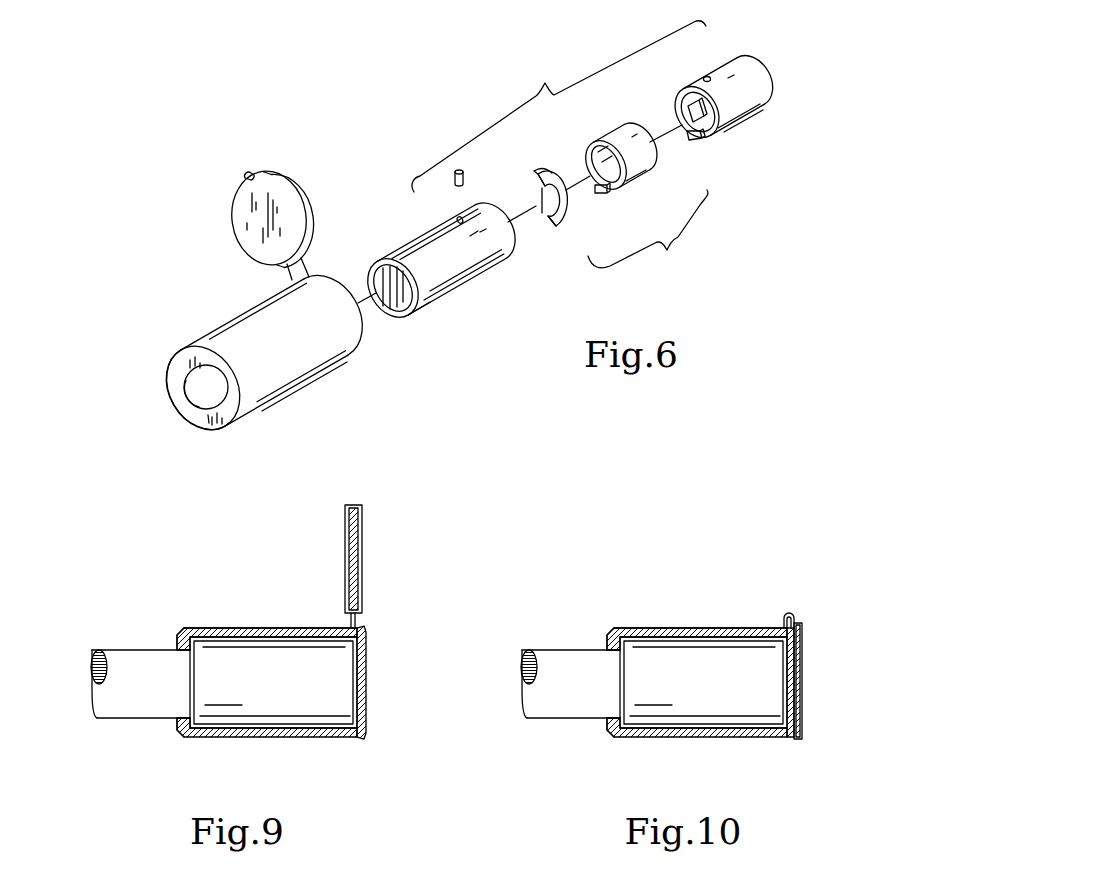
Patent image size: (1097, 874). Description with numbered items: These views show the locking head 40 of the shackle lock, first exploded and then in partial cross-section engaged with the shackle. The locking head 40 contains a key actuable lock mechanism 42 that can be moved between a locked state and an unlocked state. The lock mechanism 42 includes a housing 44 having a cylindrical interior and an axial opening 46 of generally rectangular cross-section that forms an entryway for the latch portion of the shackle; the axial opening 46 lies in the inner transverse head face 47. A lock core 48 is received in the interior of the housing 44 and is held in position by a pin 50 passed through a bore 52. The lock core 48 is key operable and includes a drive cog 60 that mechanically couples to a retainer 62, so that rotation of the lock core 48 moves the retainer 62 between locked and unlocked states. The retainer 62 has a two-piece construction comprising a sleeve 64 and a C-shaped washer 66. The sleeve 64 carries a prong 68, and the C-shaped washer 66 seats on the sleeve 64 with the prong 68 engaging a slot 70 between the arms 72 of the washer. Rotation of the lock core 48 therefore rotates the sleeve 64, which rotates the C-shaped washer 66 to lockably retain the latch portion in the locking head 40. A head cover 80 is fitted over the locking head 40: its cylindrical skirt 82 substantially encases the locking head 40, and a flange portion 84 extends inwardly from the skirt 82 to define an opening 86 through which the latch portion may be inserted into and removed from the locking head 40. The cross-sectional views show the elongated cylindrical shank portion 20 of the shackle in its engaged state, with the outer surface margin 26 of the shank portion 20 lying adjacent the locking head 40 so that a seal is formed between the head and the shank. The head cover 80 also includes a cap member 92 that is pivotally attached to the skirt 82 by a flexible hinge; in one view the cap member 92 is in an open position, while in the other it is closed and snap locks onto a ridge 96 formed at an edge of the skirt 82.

In FIG. 9, the shank portion 20 is at (128, 666).
In FIG. 10, the shank portion 20 is at (558, 666).
In FIG. 9, the outer surface margin 26 is at (177, 690).
In FIG. 10, the outer surface margin 26 is at (607, 690).
In FIG. 9, the locking head 40 is at (254, 693).
In FIG. 10, the locking head 40 is at (686, 691).
In FIG. 6, the key actuable lock mechanism 42 is at (559, 106).
In FIG. 6, the housing 44 is at (462, 283).
In FIG. 6, the axial opening 46 is at (394, 306).
In FIG. 6, the inner transverse head face 47 is at (405, 317).
In FIG. 6, the lock core 48 is at (747, 116).
In FIG. 6, the pin 50 is at (457, 168).
In FIG. 6, the bore 52 is at (461, 216).
In FIG. 6, the drive cog 60 is at (705, 122).
In FIG. 6, the retainer 62 is at (648, 233).
In FIG. 6, the sleeve 64 is at (628, 124).
In FIG. 6, the C-shaped washer 66 is at (551, 165).
In FIG. 6, the prong 68 is at (600, 194).
In FIG. 6, the slot 70 is at (545, 228).
In FIG. 6, the arms 72 is at (537, 188).
In FIG. 6, the head cover 80 is at (305, 398).
In FIG. 9, the head cover 80 is at (262, 739).
In FIG. 10, the head cover 80 is at (692, 739).
In FIG. 9, the cylindrical skirt 82 is at (312, 627).
In FIG. 10, the cylindrical skirt 82 is at (742, 627).
In FIG. 6, the flange portion 84 is at (192, 420).
In FIG. 9, the flange portion 84 is at (180, 640).
In FIG. 10, the flange portion 84 is at (610, 640).
In FIG. 6, the opening 86 is at (201, 387).
In FIG. 6, the cap member 92 is at (245, 178).
In FIG. 9, the cap member 92 is at (344, 548).
In FIG. 10, the cap member 92 is at (802, 676).
In FIG. 9, the ridge 96 is at (365, 736).